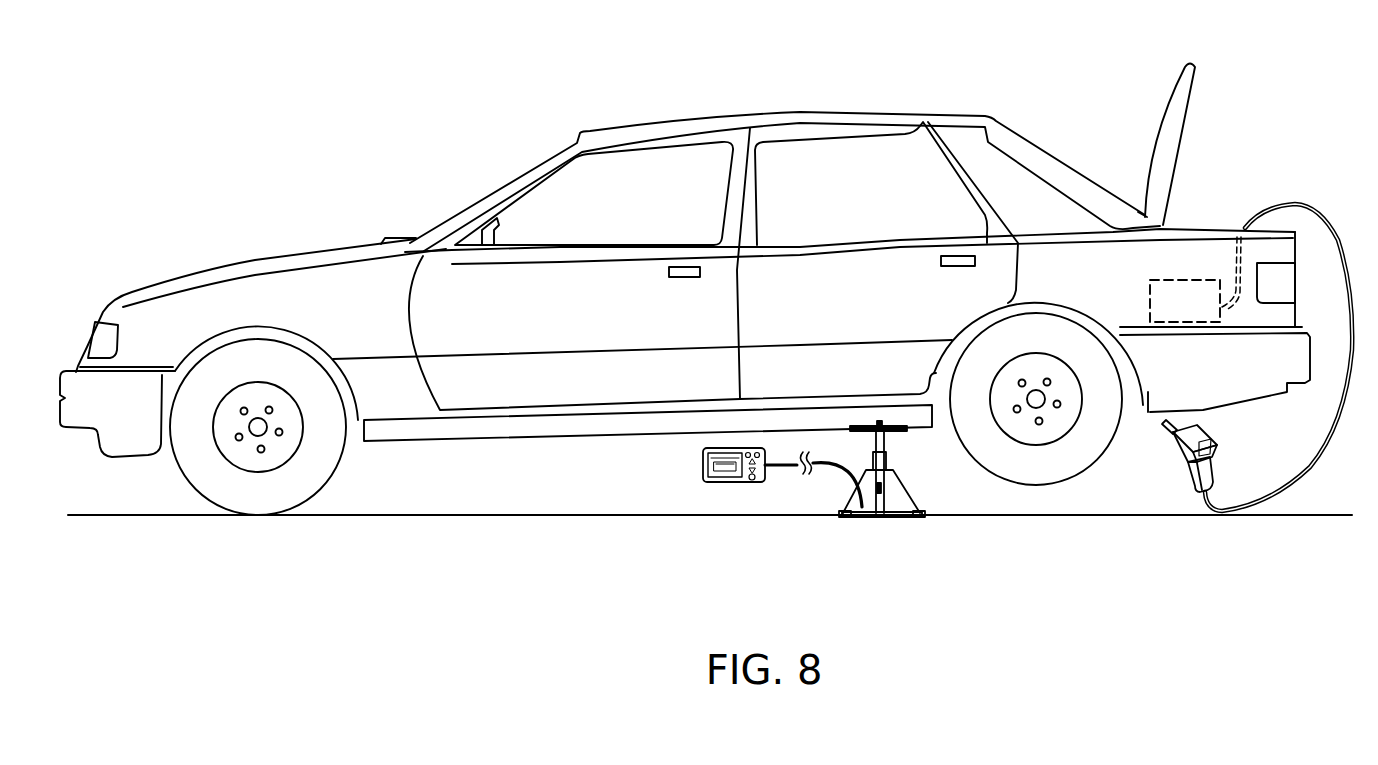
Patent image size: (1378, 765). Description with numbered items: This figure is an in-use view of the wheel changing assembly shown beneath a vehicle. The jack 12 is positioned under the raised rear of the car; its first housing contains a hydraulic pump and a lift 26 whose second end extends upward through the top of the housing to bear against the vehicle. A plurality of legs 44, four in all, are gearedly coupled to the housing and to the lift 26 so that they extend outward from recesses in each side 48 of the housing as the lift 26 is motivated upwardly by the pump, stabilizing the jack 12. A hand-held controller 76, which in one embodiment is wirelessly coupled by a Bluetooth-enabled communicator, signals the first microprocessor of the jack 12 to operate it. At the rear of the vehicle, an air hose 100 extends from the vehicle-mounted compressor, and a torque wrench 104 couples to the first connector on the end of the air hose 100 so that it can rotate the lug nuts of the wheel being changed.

The jack 12 is at (907, 480).
The lift 26 is at (873, 458).
The legs 44 is at (925, 510).
The side 48 is at (1188, 293).
The controller 76 is at (731, 482).
The air hose 100 is at (1307, 213).
The torque wrench 104 is at (1185, 475).